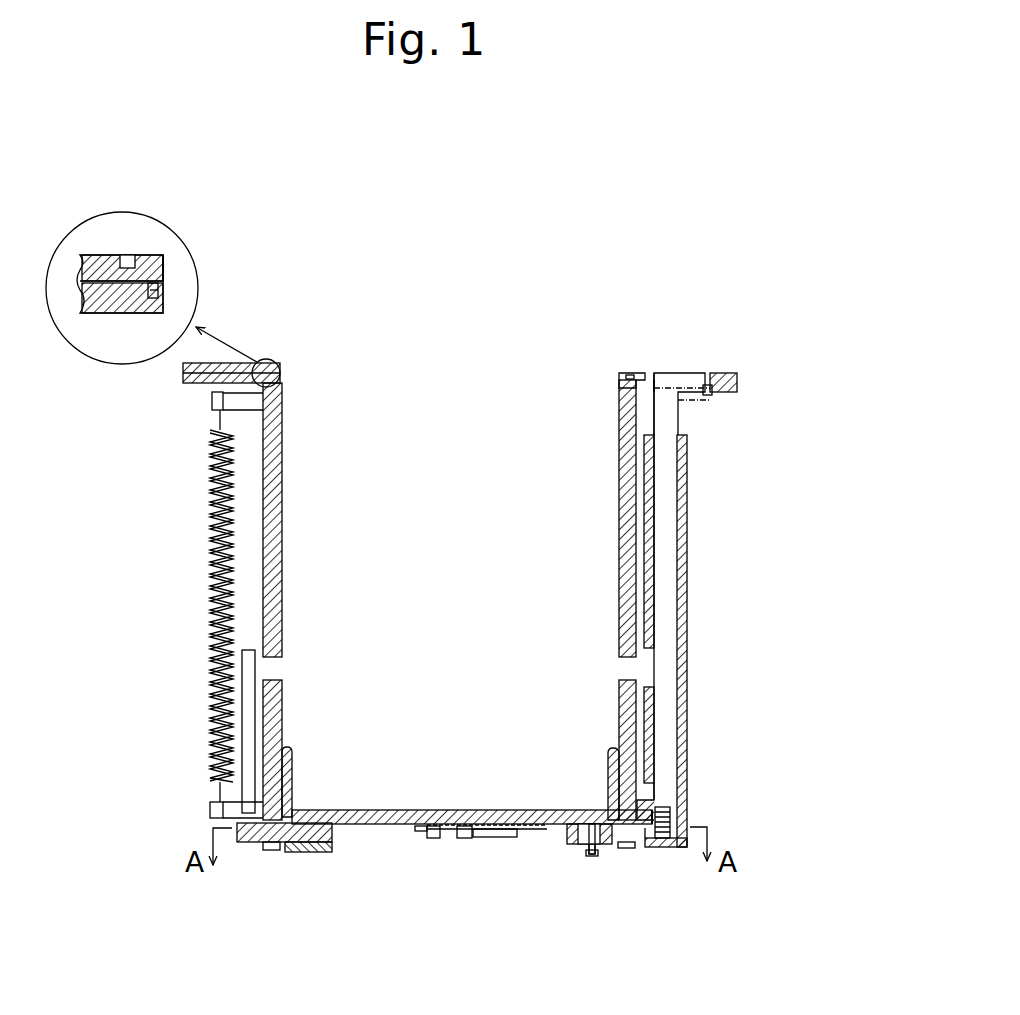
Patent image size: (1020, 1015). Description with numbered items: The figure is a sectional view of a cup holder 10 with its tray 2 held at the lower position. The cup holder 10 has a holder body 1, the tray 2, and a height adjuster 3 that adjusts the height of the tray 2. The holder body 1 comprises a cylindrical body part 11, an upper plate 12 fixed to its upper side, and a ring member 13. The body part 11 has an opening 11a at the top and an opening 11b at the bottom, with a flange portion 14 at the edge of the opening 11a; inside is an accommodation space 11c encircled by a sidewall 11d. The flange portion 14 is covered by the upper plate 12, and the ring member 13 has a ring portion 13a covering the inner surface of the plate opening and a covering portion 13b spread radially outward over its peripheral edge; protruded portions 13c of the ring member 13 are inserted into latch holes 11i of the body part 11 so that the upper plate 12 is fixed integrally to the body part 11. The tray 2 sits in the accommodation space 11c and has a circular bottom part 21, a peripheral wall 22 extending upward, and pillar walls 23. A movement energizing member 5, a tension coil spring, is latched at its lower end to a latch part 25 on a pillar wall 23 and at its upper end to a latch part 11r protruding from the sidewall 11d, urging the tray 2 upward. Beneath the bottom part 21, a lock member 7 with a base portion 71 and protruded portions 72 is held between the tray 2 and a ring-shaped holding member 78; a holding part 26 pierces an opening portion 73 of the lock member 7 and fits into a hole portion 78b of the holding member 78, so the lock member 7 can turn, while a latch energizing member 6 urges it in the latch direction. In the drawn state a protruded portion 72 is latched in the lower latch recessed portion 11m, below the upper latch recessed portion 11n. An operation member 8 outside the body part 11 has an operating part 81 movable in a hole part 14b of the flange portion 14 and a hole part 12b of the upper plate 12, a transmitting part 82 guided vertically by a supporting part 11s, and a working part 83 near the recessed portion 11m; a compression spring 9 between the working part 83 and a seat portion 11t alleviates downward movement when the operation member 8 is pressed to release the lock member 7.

The holder body 1 is at (284, 360).
The tray 2 is at (358, 806).
The height adjuster 3 is at (212, 752).
The movement energizing member 5 is at (215, 626).
The latch energizing member 6 is at (495, 838).
The lock member 7 is at (306, 853).
The operation member 8 is at (681, 421).
The compression spring 9 is at (668, 810).
The cup holder 10 is at (738, 286).
The body part 11 is at (270, 488).
The opening 11a is at (468, 375).
The opening 11b is at (378, 830).
The accommodation space 11c is at (480, 560).
The sidewall 11d is at (263, 530).
The latch hole 11i is at (150, 300).
The lower latch recessed portion 11m is at (610, 792).
The upper latch recessed portion 11n is at (625, 683).
The latch part 11r is at (212, 400).
The supporting part 11s is at (685, 645).
The seat portion 11t is at (668, 846).
The upper plate 12 is at (96, 255).
The hole part 12b is at (645, 380).
The ring member 13 is at (143, 268).
The ring portion 13a is at (165, 272).
The covering portion 13b is at (128, 262).
The protruded portion 13c is at (160, 292).
The flange portion 14 is at (100, 310).
The hole part 14b is at (651, 386).
The bottom part 21 is at (397, 810).
The peripheral wall 22 is at (292, 758).
The pillar wall 23 is at (246, 694).
The latch part 25 is at (210, 812).
The holding part 26 is at (436, 839).
The base portion 71 is at (302, 823).
The protruded portion 72 is at (636, 830).
The opening portion 73 is at (580, 831).
The holding member 78 is at (270, 851).
The hole portion 78b is at (590, 852).
The operating part 81 is at (690, 373).
The transmitting part 82 is at (653, 603).
The working part 83 is at (655, 790).